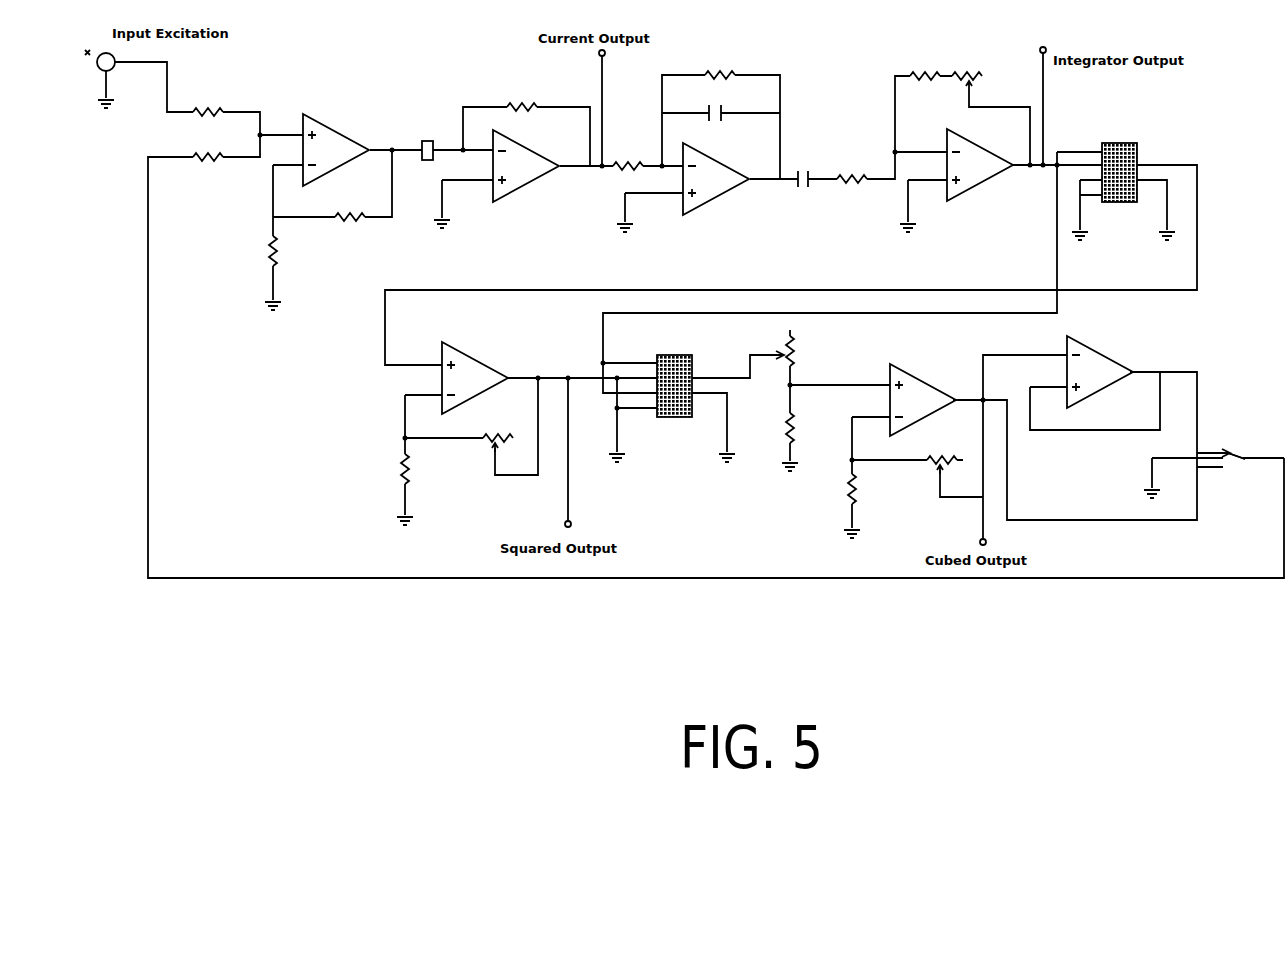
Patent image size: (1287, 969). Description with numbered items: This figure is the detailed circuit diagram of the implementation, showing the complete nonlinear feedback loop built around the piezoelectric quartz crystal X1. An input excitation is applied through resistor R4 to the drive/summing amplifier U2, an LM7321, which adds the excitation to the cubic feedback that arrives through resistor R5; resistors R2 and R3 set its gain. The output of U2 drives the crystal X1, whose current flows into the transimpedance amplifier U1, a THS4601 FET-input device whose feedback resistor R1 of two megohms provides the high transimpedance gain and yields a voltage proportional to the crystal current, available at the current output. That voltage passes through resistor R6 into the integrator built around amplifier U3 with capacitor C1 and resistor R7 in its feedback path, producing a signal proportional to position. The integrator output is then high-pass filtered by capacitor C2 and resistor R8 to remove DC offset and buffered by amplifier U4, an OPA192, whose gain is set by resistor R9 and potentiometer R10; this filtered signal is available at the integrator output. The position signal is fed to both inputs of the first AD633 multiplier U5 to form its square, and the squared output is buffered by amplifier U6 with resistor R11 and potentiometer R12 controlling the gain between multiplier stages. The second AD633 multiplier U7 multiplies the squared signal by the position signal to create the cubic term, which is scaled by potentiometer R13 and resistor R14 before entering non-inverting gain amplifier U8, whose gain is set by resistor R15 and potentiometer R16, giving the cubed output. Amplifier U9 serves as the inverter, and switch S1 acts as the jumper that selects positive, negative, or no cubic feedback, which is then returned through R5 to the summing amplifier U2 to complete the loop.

The 2 MOhm feedback resistor R1 is at (525, 86).
The 1 kOhm resistor R2 is at (350, 219).
The 1 kOhm resistor R3 is at (237, 243).
The 1 kOhm resistor R4 is at (202, 97).
The 1 kOhm resistor R5 is at (211, 158).
The 1 kOhm resistor R6 is at (613, 163).
The 200 kOhm resistor R7 is at (722, 55).
The 1 kOhm resistor R8 is at (858, 179).
The 1 kOhm resistor R9 is at (890, 67).
The 10 kOhm potentiometer R10 is at (972, 64).
The 1 kOhm resistor R11 is at (368, 463).
The 10 kOhm potentiometer R12 is at (490, 439).
The 100 kOhm potentiometer R13 is at (827, 345).
The 10 kOhm resistor R14 is at (825, 418).
The 1 kOhm resistor R15 is at (814, 489).
The 10 kOhm potentiometer R16 is at (939, 464).
The 220 pF capacitor C1 is at (718, 114).
The 100 nF capacitor C2 is at (802, 183).
The crystal / sensor element X1 is at (436, 141).
The switch S1 is at (1247, 452).
The THS4631 operational amplifier U1 is at (512, 180).
The LM7321 operational amplifier U2 is at (318, 141).
The OPA37 operational amplifier U3 is at (705, 188).
The OPA192 operational amplifier U4 is at (966, 180).
The AD633 analog multiplier U5 is at (1110, 153).
The OPA192 operational amplifier U6 is at (467, 373).
The AD633 analog multiplier U7 is at (675, 367).
The OPA192 operational amplifier U8 is at (911, 397).
The OPA192 operational amplifier U9 is at (1087, 376).